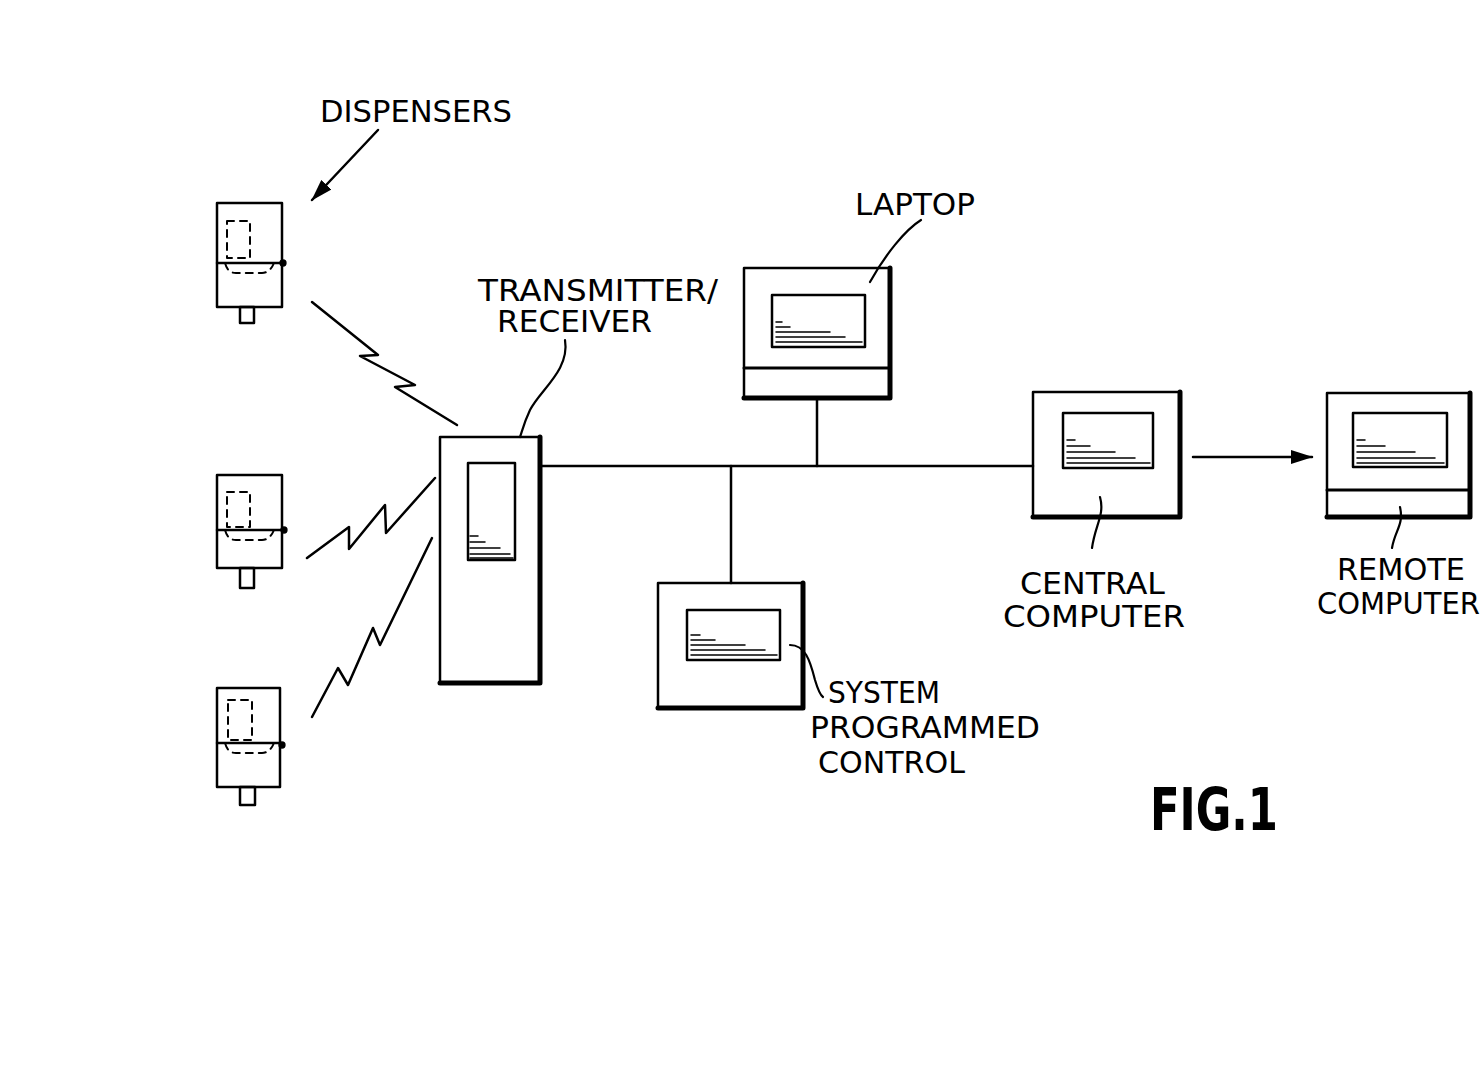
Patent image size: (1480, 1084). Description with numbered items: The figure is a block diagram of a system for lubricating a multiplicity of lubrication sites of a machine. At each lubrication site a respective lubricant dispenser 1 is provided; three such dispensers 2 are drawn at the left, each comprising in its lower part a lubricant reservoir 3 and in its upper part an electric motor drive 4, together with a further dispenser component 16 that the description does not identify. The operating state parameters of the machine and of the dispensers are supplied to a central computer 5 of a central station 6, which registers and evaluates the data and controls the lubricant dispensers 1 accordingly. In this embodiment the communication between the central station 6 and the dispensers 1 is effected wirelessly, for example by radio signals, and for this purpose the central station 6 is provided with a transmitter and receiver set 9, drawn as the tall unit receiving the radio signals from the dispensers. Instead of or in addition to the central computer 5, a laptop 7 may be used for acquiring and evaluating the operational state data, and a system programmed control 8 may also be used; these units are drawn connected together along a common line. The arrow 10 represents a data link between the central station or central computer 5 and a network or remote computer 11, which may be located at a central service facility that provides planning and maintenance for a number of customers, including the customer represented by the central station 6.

The lubricant dispenser 1 is at (243, 193).
The dispenser 2 is at (290, 262).
The lubricant reservoir 3 is at (228, 288).
The electric motor drive 4 is at (232, 246).
The actuator 16 is at (225, 268).
The central computer 5 is at (1135, 393).
The central station 6 is at (985, 300).
The laptop 7 is at (820, 268).
The system programmed control 8 is at (694, 668).
The transmitter and receiver set 9 is at (492, 662).
The data link 10 is at (1240, 455).
The remote computer 11 is at (1423, 393).